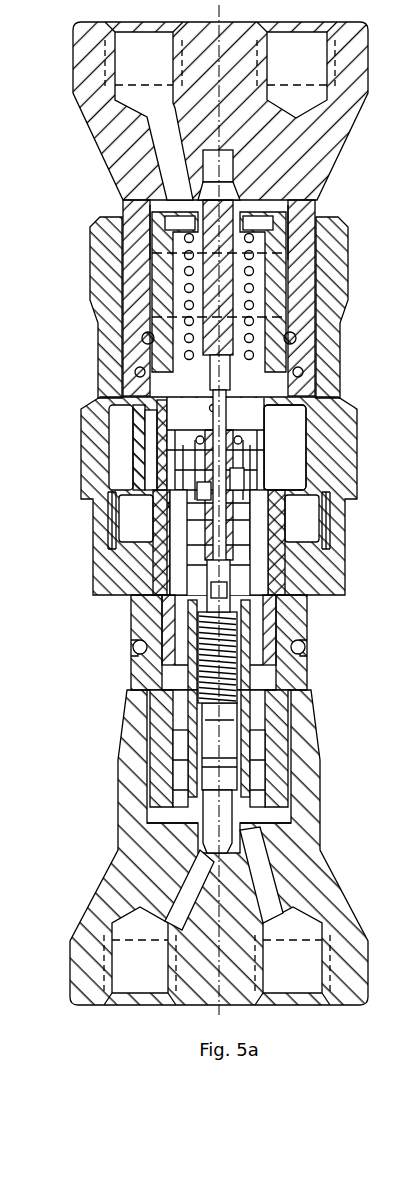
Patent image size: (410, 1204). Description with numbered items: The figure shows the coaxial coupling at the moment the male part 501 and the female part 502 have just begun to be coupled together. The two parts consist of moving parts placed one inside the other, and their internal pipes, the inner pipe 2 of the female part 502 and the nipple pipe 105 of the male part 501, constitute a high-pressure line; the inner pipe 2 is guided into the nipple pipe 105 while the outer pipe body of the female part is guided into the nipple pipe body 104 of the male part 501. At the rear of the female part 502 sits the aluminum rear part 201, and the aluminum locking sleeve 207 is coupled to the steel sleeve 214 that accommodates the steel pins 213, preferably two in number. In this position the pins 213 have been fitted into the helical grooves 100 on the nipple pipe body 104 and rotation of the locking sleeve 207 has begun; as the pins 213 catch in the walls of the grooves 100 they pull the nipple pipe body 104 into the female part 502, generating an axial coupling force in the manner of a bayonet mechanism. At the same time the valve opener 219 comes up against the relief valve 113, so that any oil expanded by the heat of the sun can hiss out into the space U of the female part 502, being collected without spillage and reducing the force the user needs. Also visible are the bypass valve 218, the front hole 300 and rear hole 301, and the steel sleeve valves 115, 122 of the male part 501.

The aluminum rear part (of female part) 201 is at (72, 36).
The female part 502 is at (192, 210).
The aluminum locking sleeve 207 is at (88, 273).
The rear hole 301 is at (210, 408).
The inner pipe 2 is at (300, 430).
The bypass valve 218 is at (236, 478).
The front hole 300 is at (212, 490).
The valve opener 219 is at (106, 517).
The valve (steel sleeve) 115 is at (146, 527).
The steel pin 213 is at (176, 545).
The nipple pipe body 104 is at (268, 576).
The steel sleeve 214 is at (131, 597).
The groove 100 is at (150, 600).
The valve (steel sleeve) 122 is at (138, 626).
The relief valve 113 is at (240, 612).
The nipple pipe 105 is at (292, 647).
The male part 501 is at (70, 828).
The space of female part u is at (262, 440).